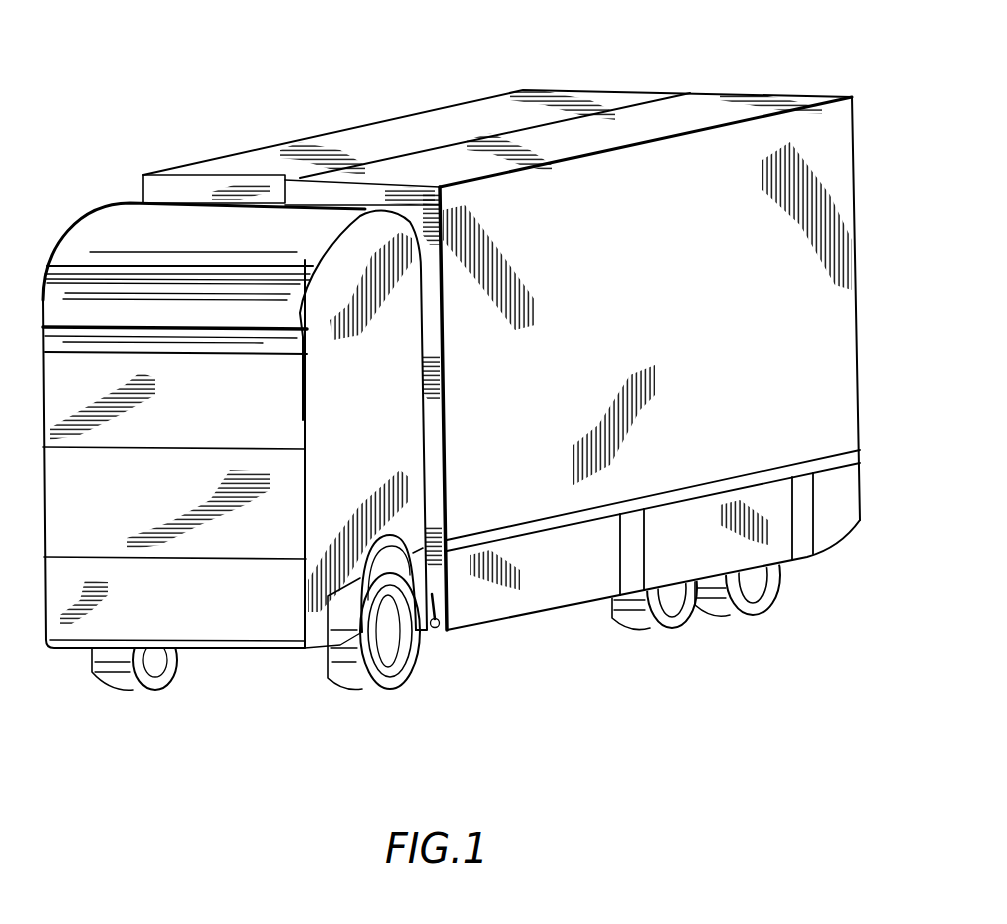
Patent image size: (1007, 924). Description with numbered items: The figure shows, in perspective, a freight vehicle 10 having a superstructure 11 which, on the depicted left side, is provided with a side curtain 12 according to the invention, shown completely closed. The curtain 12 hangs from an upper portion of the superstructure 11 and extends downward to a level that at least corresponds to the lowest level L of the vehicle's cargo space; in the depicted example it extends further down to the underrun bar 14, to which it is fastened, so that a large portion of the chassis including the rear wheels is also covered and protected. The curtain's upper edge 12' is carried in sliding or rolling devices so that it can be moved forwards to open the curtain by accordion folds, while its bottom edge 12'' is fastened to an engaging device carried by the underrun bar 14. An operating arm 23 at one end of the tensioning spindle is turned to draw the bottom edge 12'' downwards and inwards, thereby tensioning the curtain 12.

The freight vehicle 10 is at (72, 228).
The superstructure 11 is at (694, 82).
The side curtain 12 is at (650, 386).
The upper edge 12' is at (497, 146).
The bottom edge 12'' is at (641, 579).
The underrun bar 14 is at (586, 610).
The operating arm 23 is at (452, 601).
The lowest level of the cargo space L is at (552, 513).